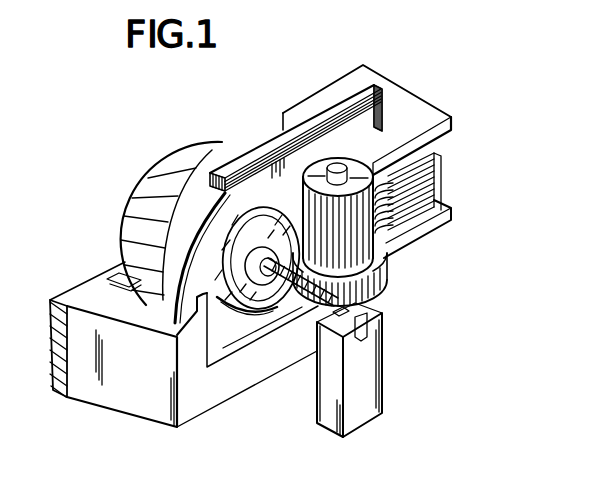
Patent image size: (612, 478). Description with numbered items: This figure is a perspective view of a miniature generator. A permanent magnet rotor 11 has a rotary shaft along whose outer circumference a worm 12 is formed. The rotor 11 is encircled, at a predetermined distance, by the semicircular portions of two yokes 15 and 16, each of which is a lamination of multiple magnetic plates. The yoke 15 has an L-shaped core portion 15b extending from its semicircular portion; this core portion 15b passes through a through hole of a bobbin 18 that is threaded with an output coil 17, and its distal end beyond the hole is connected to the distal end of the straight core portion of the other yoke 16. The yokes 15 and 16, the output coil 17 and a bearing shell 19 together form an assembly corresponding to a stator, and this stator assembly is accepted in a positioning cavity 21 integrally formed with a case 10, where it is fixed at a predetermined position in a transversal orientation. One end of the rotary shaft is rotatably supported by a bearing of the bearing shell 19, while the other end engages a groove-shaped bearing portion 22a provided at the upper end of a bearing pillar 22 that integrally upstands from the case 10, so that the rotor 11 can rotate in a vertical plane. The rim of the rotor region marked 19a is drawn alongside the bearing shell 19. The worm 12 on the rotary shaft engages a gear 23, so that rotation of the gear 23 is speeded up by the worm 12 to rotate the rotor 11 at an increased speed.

The case 10 is at (125, 415).
The permanent magnet rotor 11 is at (248, 300).
The worm 12 is at (313, 305).
The yoke 15 is at (246, 152).
The L-shaped core portion 15b is at (342, 108).
The yoke 16 is at (219, 330).
The output coil 17 is at (421, 167).
The bobbin 18 is at (423, 100).
The bearing shell 19 is at (137, 217).
The wheel rim 19a is at (198, 184).
The positioning cavity 21 is at (103, 270).
The bearing pillar 22 is at (328, 395).
The bearing portion 22a is at (372, 310).
The gear 23 is at (388, 272).